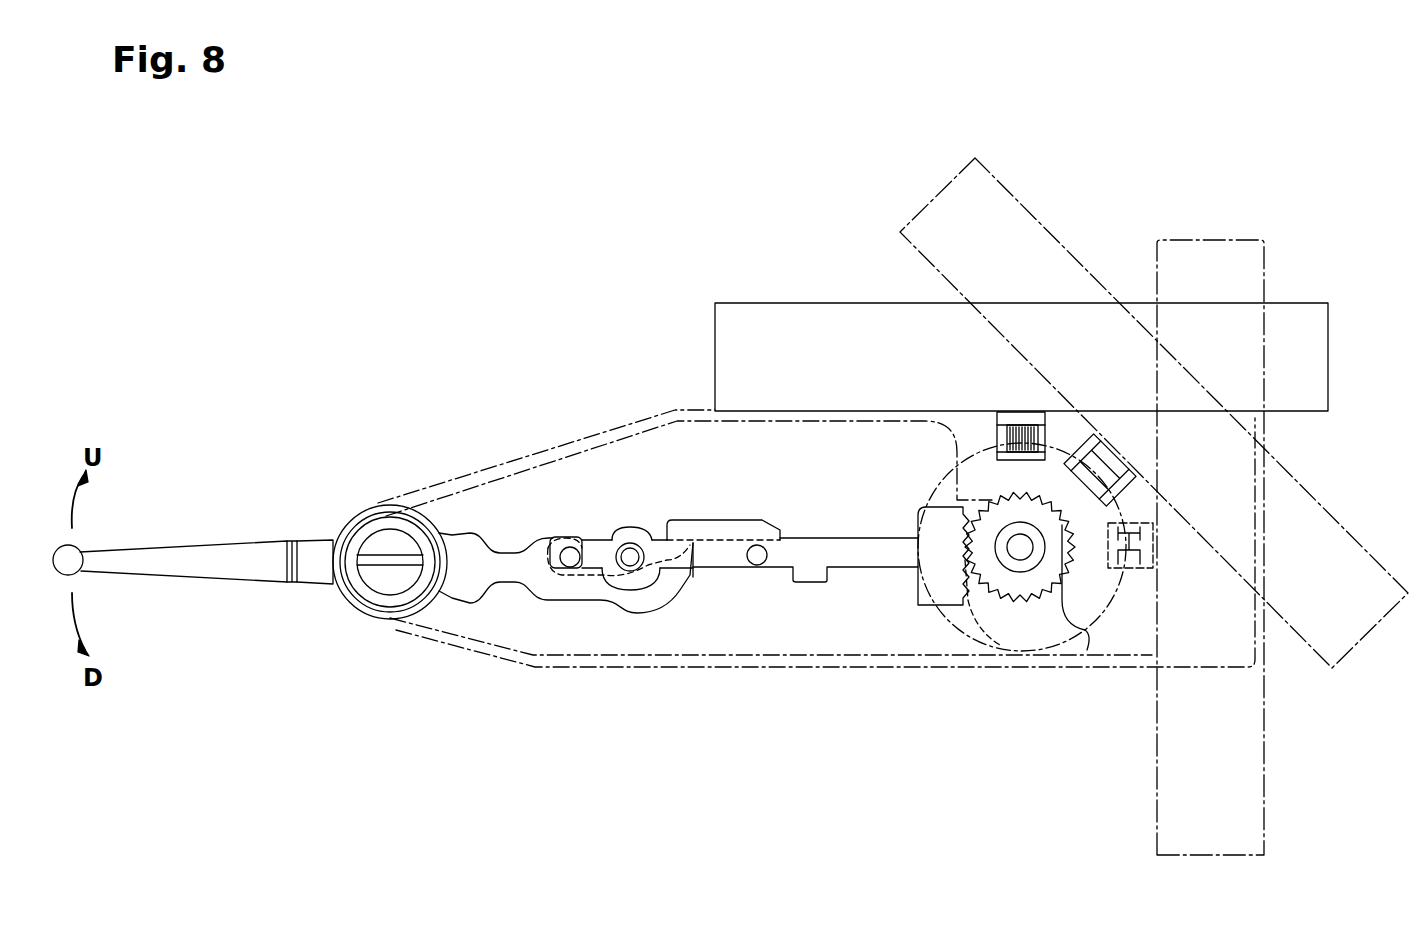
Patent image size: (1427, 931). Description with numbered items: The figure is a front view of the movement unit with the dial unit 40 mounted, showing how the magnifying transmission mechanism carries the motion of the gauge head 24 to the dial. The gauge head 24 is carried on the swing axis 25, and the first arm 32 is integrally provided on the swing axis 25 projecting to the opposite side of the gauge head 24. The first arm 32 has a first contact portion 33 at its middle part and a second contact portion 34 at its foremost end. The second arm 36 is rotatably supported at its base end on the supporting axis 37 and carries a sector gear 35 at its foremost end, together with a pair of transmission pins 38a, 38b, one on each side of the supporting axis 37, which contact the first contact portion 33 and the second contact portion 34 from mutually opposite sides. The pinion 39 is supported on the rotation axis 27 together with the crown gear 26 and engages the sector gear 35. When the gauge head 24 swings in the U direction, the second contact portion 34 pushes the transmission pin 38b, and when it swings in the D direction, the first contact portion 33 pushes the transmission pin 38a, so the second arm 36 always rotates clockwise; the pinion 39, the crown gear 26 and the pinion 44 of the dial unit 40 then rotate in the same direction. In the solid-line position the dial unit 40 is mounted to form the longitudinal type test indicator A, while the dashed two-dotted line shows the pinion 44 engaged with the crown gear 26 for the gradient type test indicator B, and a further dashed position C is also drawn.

The gauge head 24 is at (200, 575).
The swing axis 25 is at (392, 543).
The crown gear 26 is at (1112, 608).
The rotation axis 27 is at (1020, 548).
The first arm 32 is at (460, 586).
The first contact portion 33 is at (568, 582).
The second contact portion 34 is at (770, 528).
The sector gear 35 is at (948, 584).
The second arm 36 is at (860, 536).
The supporting axis 37 is at (630, 543).
The transmission pin 38a is at (570, 547).
The transmission pin 38b is at (757, 566).
The pinion 39 is at (990, 592).
The dial unit 40 is at (808, 312).
The pinion 44 is at (1000, 425).
The longitudinal type test indicator A is at (696, 280).
The gradient type test indicator B is at (1004, 155).
The plate C is at (1238, 215).